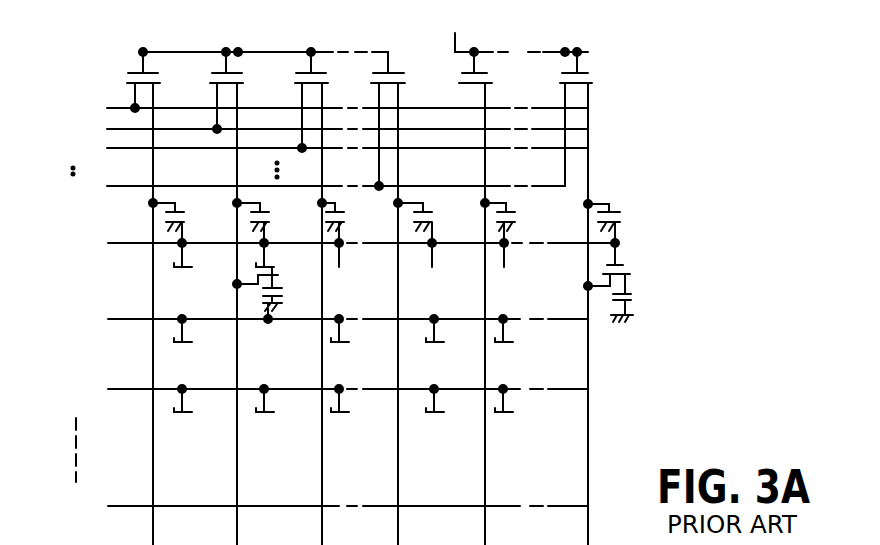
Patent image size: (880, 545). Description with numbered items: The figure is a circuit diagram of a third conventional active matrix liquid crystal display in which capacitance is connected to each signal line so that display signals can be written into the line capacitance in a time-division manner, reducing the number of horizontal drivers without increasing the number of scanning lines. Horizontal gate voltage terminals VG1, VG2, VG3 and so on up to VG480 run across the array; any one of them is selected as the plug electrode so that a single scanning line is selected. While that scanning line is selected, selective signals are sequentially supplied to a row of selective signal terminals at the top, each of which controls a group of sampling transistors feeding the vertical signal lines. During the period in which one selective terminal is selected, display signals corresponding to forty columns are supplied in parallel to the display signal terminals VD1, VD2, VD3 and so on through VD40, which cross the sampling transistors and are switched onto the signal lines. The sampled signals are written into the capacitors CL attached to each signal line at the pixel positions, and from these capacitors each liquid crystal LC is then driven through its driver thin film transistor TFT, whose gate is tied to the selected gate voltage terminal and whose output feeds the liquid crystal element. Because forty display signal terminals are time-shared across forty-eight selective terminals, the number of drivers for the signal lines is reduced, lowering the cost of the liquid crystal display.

The display signal terminal VD1 is at (318, 104).
The display signal terminal VD2 is at (318, 128).
The display signal terminal VD3 is at (318, 151).
The display signal terminal VD40 is at (305, 192).
The gate voltage terminal VG1 is at (332, 244).
The gate voltage terminal VG2 is at (319, 320).
The gate voltage terminal VG3 is at (319, 391).
The gate voltage terminal VG480 is at (305, 508).
The capacitor CL is at (621, 217).
The driver thin film transistor TFT is at (630, 270).
The liquid crystal LC is at (633, 308).